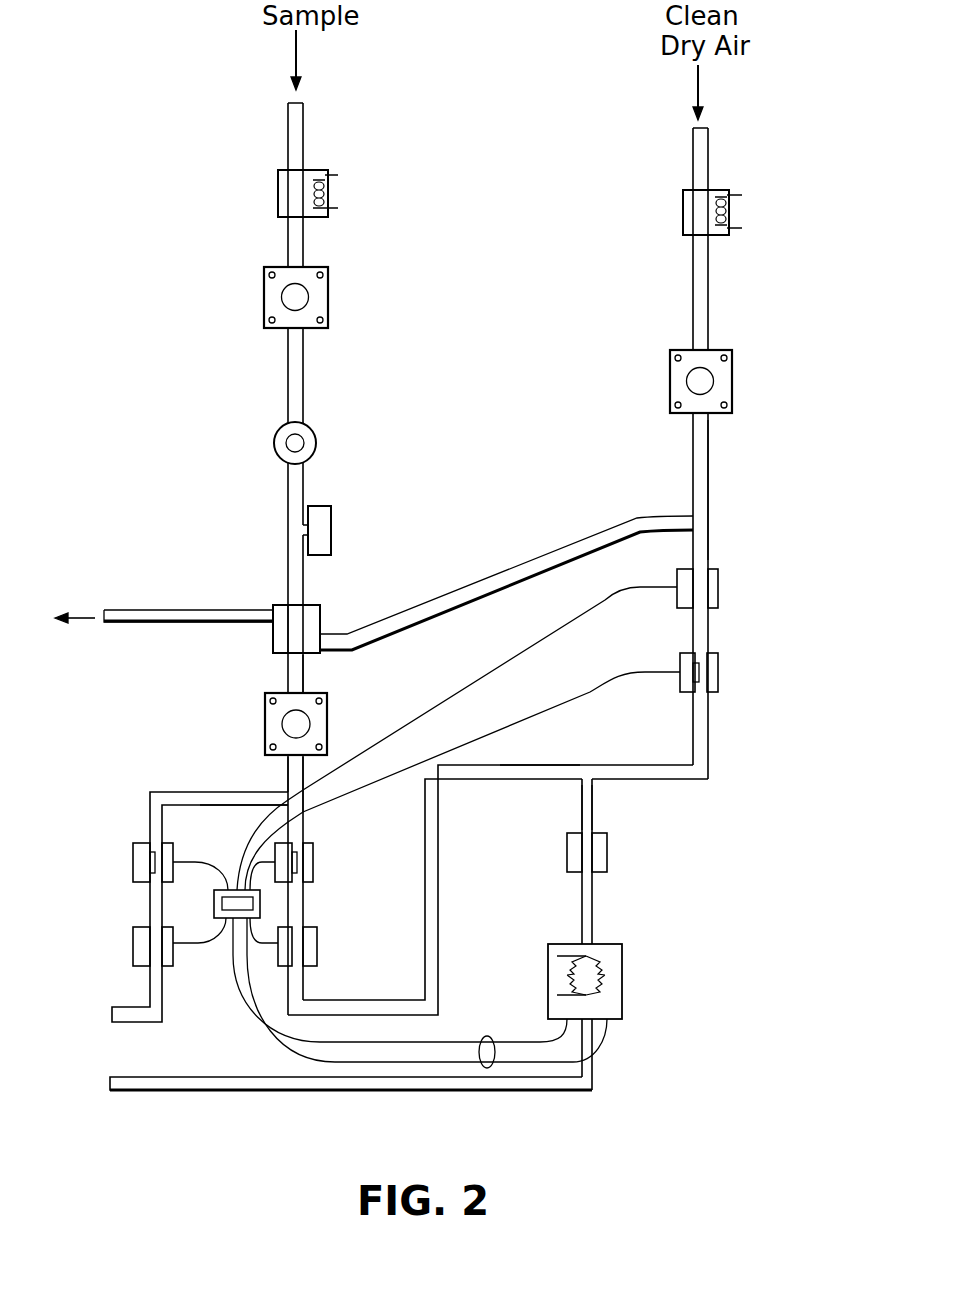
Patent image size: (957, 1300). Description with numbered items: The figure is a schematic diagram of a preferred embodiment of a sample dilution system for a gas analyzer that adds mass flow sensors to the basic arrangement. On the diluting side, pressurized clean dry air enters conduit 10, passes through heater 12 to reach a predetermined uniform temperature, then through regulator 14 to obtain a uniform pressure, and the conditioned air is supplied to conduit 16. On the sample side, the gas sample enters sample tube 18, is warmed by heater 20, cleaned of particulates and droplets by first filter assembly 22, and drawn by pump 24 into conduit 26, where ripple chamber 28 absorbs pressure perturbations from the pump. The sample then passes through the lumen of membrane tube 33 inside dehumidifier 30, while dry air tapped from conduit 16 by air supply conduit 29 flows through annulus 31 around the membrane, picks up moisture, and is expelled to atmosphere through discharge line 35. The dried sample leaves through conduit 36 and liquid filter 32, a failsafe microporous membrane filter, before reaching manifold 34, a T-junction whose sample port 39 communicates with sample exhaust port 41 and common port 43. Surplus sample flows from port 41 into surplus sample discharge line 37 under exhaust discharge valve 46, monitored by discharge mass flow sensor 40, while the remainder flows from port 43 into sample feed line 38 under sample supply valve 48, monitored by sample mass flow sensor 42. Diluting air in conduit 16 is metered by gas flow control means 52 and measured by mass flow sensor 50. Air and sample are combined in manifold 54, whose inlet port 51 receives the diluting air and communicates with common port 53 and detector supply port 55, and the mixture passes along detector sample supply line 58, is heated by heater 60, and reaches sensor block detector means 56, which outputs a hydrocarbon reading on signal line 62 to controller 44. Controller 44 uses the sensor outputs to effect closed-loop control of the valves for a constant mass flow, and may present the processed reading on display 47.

The conduit 10 is at (708, 152).
The heater 12 is at (683, 203).
The regulator 14 is at (727, 382).
The conduit 16 is at (708, 487).
The sample tube 18 is at (288, 140).
The heater 20 is at (278, 200).
The first filter assembly 22 is at (264, 305).
The pump 24 is at (274, 445).
The conduit 26 is at (288, 528).
The ripple chamber 28 is at (331, 516).
The air supply conduit 29 is at (487, 578).
The dehumidifier 30 is at (273, 625).
The annulus 31 is at (308, 625).
The liquid filter 32 is at (265, 724).
The membrane tube 33 is at (293, 640).
The manifold 34 is at (288, 790).
The discharge line 35 is at (143, 610).
The conduit 36 is at (305, 674).
The surplus sample discharge line 37 is at (150, 792).
The sample feed line 38 is at (425, 825).
The sample port 39 is at (296, 785).
The discharge mass flow sensor 40 is at (133, 942).
The sample exhaust port 41 is at (260, 797).
The sample mass flow sensor 42 is at (317, 943).
The common port 43 is at (296, 806).
The controller 44 is at (222, 918).
The exhaust discharge valve 46 is at (133, 872).
The display 47 is at (213, 903).
The sample supply valve 48 is at (313, 862).
The mass flow sensor 50 is at (718, 585).
The inlet port 51 is at (597, 778).
The gas flow control means 52 is at (718, 670).
The common port 53 is at (567, 778).
The manifold 54 is at (592, 787).
The detector supply port 55 is at (582, 785).
The sensor block detector means 56 is at (622, 968).
The detector sample supply line 58 is at (593, 820).
The heater 60 is at (608, 857).
The signal line 62 is at (486, 1036).